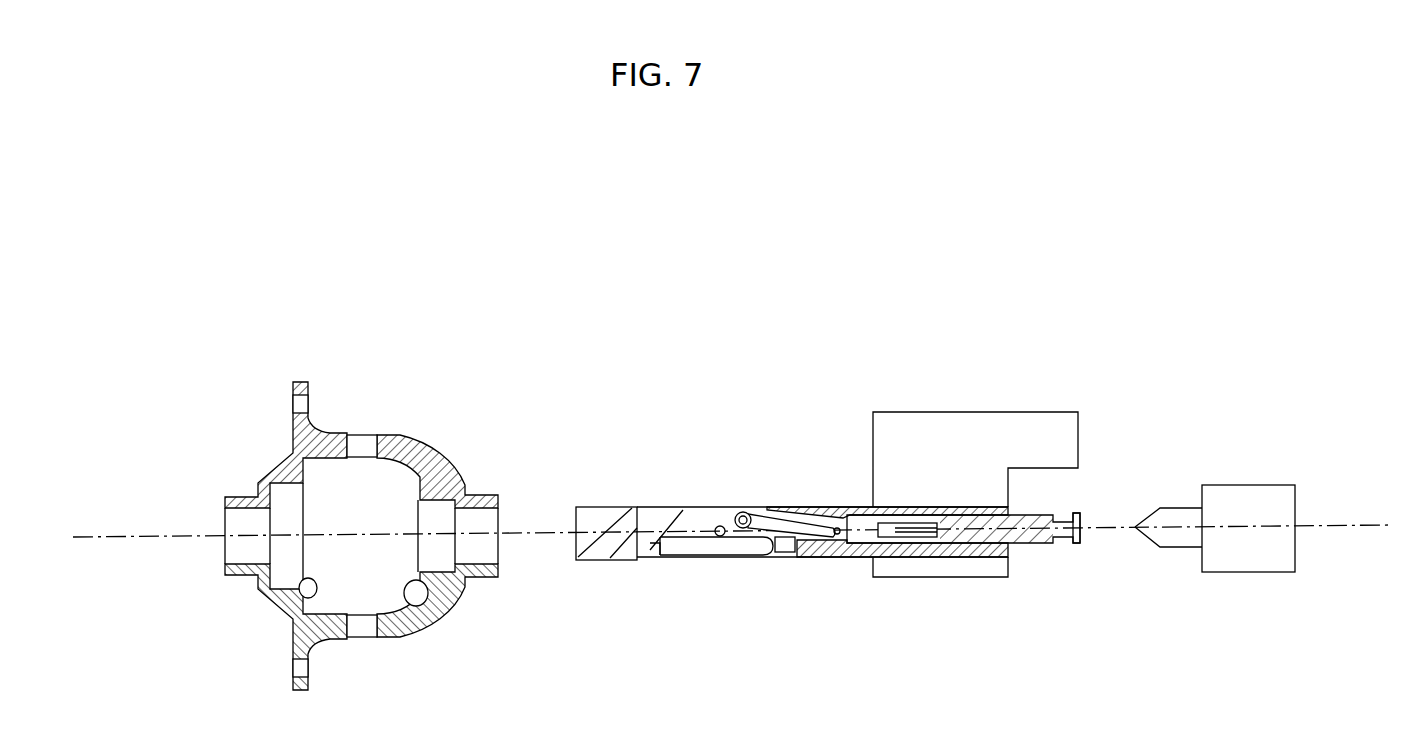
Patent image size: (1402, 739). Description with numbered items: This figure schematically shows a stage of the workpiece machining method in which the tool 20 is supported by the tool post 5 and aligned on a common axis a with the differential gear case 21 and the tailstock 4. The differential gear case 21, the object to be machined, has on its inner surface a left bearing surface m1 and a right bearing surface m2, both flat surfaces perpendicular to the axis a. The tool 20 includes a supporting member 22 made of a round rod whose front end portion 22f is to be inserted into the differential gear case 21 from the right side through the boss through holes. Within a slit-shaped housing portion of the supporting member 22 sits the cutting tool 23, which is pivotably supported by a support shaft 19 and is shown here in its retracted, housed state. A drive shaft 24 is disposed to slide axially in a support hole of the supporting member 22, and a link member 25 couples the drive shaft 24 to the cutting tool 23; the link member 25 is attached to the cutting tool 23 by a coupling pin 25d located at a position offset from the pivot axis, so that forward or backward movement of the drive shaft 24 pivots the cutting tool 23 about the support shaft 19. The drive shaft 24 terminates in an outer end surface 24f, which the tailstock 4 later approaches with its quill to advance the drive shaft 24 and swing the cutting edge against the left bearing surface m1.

The axis a is at (148, 535).
The differential gear case 21 is at (355, 511).
The left bearing surface m1 is at (280, 598).
The right bearing surface m2 is at (407, 617).
The front end portion 22f is at (608, 507).
The tool 20 is at (866, 520).
The coupling pin 25d is at (745, 510).
The supporting member 22 is at (820, 492).
The tool post 5 is at (955, 412).
The tailstock 4 is at (1243, 485).
The cutting tool 23 is at (685, 556).
The support shaft 19 is at (720, 537).
The link member 25 is at (787, 535).
The drive shaft 24 is at (1002, 571).
The outer end surface 24f is at (1080, 540).